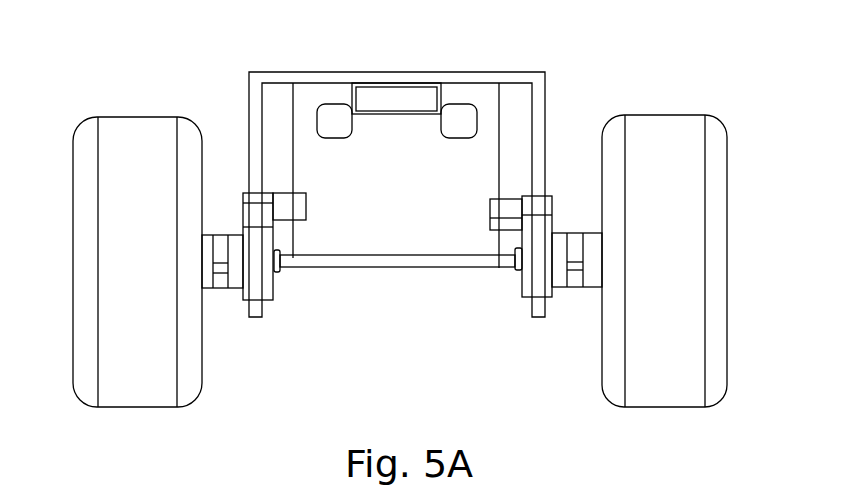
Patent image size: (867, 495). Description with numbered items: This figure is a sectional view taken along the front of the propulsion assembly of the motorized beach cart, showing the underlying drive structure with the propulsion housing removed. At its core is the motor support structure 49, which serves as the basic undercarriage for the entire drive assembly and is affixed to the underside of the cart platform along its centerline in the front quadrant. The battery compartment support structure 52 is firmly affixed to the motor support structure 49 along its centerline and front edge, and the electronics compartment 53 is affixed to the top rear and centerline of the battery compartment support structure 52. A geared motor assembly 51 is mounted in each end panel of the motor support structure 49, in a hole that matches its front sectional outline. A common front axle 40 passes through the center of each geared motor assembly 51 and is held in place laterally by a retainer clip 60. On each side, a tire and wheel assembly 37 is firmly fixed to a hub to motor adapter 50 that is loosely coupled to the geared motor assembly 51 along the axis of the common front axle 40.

The tire and wheel assembly 37 is at (118, 121).
The common front axle 40 is at (400, 258).
The motor support structure 49 is at (278, 77).
The hub to motor adapter 50 is at (207, 277).
The geared motor assembly 51 is at (497, 208).
The battery compartment support structure 52 is at (475, 93).
The electronics compartment 53 is at (366, 93).
The retainer clip 60 is at (515, 272).